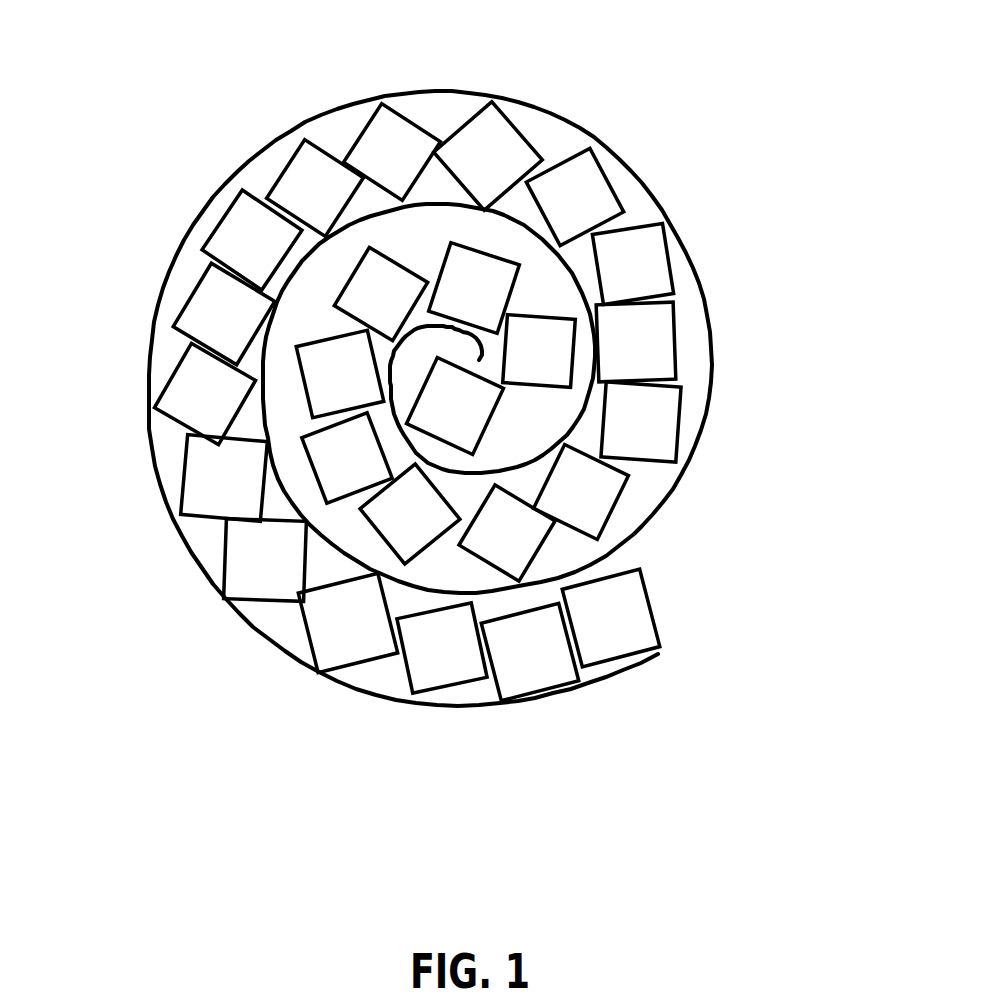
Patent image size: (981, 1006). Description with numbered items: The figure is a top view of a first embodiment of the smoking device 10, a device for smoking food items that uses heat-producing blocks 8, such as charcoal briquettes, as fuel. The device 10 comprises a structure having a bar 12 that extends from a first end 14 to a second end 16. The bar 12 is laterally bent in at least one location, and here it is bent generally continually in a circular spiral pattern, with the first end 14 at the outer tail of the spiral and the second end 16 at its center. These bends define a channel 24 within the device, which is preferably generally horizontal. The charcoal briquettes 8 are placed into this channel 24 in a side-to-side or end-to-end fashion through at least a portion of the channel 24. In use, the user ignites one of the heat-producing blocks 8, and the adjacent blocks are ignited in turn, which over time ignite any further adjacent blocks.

The smoking device 10 is at (128, 138).
The heat-producing blocks 8 is at (573, 187).
The bar 12 is at (695, 266).
The first end 14 is at (660, 655).
The second end 16 is at (482, 353).
The channel 24 is at (650, 482).